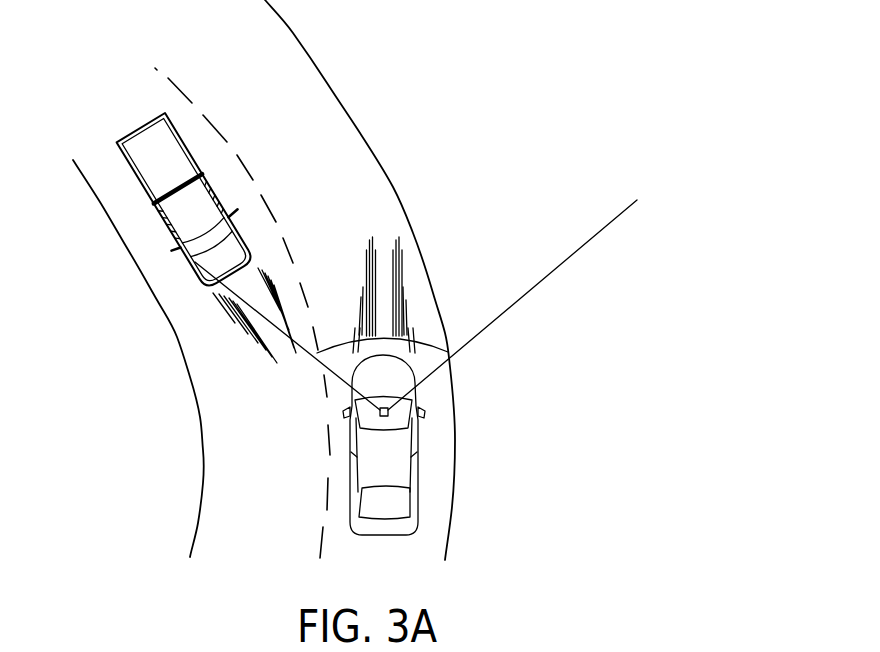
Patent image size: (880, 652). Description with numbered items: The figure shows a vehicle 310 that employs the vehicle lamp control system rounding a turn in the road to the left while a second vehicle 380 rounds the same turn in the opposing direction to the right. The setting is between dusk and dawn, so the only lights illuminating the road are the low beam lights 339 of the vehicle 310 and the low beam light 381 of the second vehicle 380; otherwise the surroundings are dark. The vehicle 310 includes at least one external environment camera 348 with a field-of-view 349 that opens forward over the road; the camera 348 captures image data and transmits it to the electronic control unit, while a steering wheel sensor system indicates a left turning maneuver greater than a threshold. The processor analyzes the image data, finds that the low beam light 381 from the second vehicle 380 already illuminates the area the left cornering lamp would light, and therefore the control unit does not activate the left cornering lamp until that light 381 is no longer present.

The vehicle 310 is at (418, 508).
The external environment camera 348 is at (390, 415).
The field-of-view 349 is at (427, 346).
The low beam lights 339 is at (416, 284).
The second vehicle 380 is at (117, 143).
The low beam light 381 is at (220, 334).